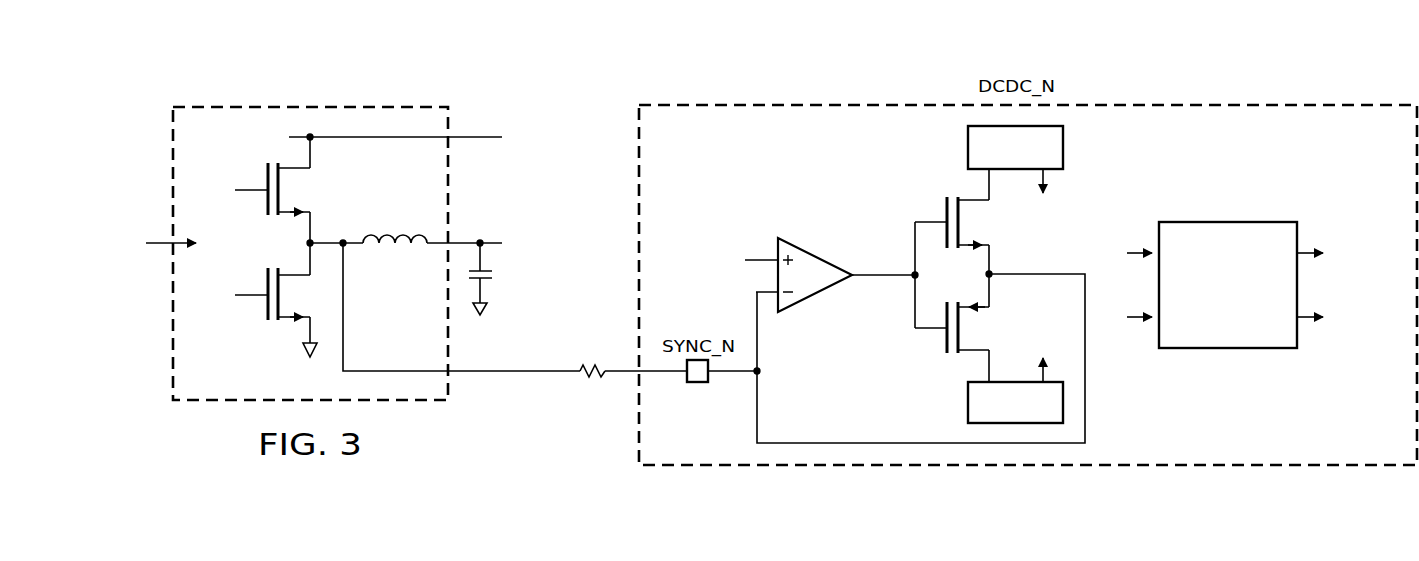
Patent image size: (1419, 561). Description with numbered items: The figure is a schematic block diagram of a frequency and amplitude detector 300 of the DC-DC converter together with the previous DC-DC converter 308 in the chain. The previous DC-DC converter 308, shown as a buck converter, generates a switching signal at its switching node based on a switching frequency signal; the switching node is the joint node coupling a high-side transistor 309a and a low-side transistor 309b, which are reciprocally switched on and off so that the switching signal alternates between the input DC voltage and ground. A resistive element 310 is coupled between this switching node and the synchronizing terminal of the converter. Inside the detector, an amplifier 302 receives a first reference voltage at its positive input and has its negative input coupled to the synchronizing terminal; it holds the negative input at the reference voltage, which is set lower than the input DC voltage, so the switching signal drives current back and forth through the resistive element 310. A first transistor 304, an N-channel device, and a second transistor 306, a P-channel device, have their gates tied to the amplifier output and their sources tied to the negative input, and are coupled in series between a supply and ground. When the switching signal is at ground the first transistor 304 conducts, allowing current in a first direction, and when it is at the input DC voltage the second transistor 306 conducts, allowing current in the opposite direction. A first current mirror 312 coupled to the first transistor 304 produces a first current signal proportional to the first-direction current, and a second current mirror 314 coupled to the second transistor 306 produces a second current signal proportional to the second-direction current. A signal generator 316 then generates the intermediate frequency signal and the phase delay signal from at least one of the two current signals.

The frequency and amplitude detector 300 is at (1260, 193).
The amplifier 302 is at (827, 232).
The first transistor 304 is at (945, 212).
The second transistor 306 is at (945, 338).
The previous DC-DC converter 308 is at (232, 97).
The high-side transistor 309a is at (267, 182).
The low-side transistor 309b is at (267, 304).
The resistive element 310 is at (588, 378).
The first current mirror 312 is at (967, 145).
The second current mirror 314 is at (967, 405).
The signal generator 316 is at (1228, 349).